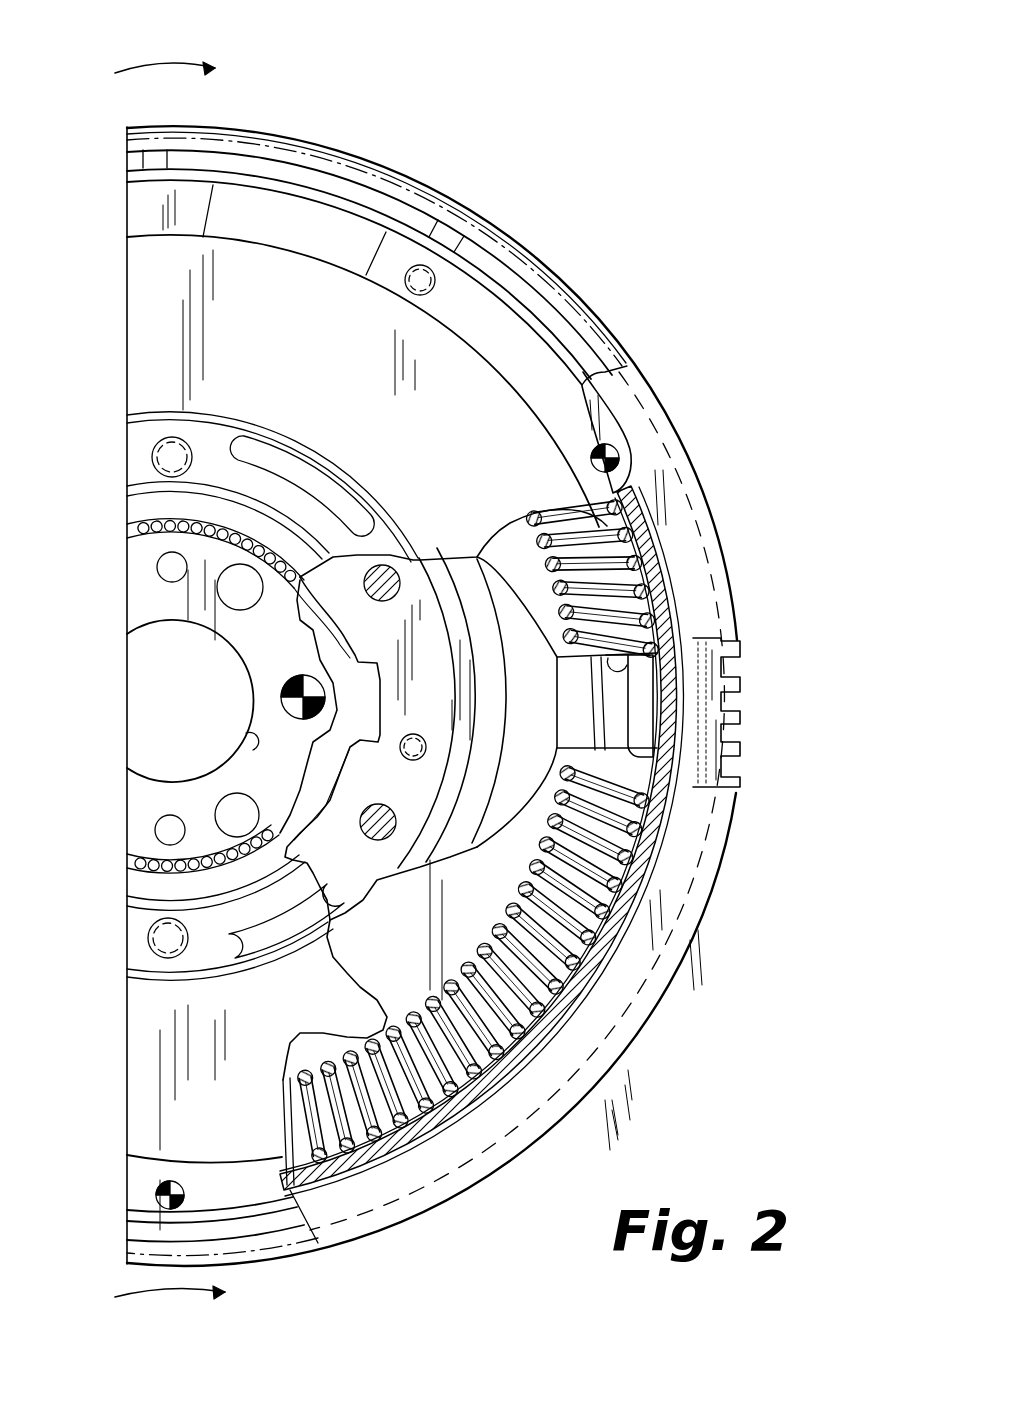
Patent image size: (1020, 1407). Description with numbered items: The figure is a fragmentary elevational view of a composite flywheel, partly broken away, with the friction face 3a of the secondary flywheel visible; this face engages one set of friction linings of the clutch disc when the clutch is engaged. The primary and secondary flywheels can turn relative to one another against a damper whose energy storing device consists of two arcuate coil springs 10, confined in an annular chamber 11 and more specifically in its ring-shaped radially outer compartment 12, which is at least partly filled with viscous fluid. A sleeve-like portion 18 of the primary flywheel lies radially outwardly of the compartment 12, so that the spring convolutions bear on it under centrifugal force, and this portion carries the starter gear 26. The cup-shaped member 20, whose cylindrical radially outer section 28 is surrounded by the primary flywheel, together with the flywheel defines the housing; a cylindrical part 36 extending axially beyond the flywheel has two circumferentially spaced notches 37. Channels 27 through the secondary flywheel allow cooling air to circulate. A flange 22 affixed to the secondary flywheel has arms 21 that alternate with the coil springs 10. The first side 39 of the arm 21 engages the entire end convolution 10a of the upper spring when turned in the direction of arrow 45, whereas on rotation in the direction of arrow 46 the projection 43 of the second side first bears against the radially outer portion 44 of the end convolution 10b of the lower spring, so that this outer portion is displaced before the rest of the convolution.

The friction face 3a is at (310, 386).
The coil springs 10 is at (673, 808).
The end convolution 10a is at (680, 630).
The end convolution 10b is at (468, 964).
The annular chamber 11 is at (423, 951).
The compartment 12 is at (643, 847).
The sleeve-like portion 18 is at (672, 740).
The cup-shaped member 20 is at (540, 300).
The arms 21 is at (620, 680).
The flange 22 is at (543, 706).
The starter gear 26 is at (680, 552).
The channels 27 is at (265, 937).
The radially outer section 28 is at (575, 345).
The cylindrical part 36 is at (495, 275).
The notches 37 is at (150, 158).
The first side 39 is at (660, 655).
The projection 43 is at (668, 730).
The radially outer portion 44 is at (672, 805).
The arrow 45 is at (165, 64).
The arrow 46 is at (155, 1305).